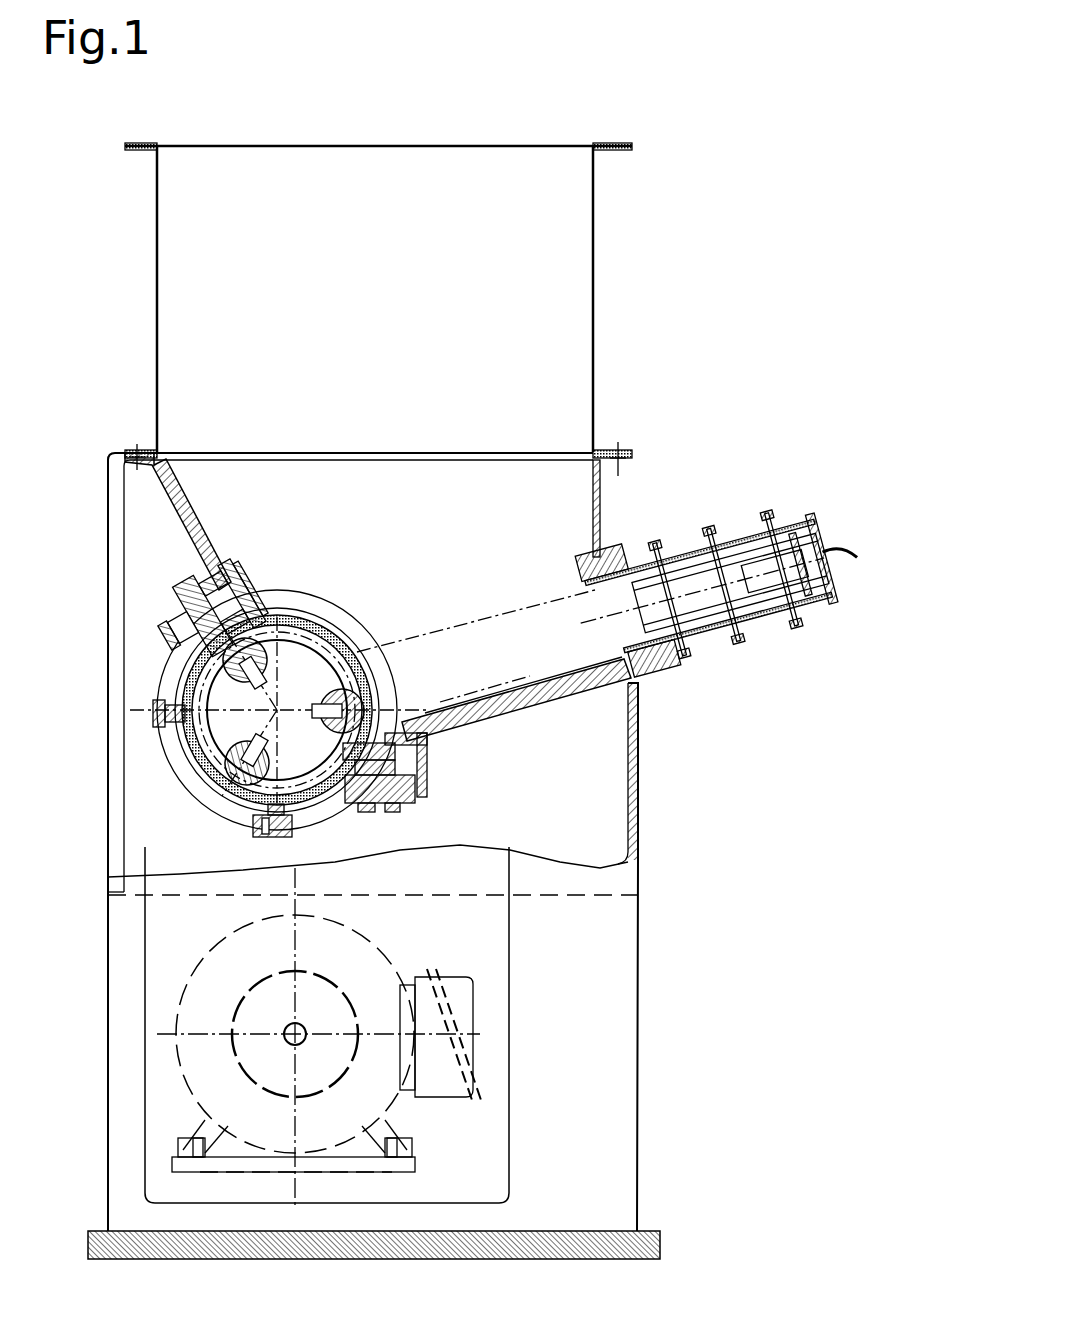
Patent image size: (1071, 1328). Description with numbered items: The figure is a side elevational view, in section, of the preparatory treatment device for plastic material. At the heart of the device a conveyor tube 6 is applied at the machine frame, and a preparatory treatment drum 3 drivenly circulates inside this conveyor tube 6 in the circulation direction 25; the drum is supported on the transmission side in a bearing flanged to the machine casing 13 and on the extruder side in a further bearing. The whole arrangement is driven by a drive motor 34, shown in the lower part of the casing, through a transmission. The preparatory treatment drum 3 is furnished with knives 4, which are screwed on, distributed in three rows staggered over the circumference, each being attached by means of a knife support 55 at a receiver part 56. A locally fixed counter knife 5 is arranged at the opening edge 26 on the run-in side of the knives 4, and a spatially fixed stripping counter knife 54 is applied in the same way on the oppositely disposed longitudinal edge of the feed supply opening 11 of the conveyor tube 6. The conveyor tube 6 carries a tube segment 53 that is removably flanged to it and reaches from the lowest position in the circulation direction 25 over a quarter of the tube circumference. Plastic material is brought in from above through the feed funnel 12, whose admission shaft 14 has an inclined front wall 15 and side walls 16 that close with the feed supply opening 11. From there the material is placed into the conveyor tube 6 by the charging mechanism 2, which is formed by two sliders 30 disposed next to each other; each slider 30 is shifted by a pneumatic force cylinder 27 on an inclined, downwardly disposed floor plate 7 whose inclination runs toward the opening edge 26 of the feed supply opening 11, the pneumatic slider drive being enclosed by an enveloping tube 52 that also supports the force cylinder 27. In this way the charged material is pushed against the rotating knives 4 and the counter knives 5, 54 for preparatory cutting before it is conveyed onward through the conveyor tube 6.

The charging mechanism 2 is at (409, 712).
The preparatory treatment drum 3 is at (308, 705).
The knife of the preparatory treatment drum 4 is at (414, 633).
The locally fixed counter knife 5 is at (255, 812).
The conveyor tube 6 is at (258, 826).
The floor plate 7 is at (540, 705).
The feed supply opening of the conveyor tube 11 is at (320, 620).
The feed funnel 12 is at (590, 425).
The machine casing 13 is at (638, 720).
The admission shaft of the feed funnel 14 is at (218, 530).
The front wall of the feed funnel 15 is at (228, 560).
The side wall of the feed funnel 16 is at (275, 495).
The circulation direction of the preparatory treatment drum 25 is at (165, 727).
The opening edge of the feed supply opening 26 is at (440, 700).
The pneumatic force cylinder of the slider 27 is at (733, 570).
The slider of the charging mechanism 30 is at (640, 590).
The drive motor of the preparatory treatment device 34 is at (330, 980).
The enveloping tube of the pneumatic slider 52 is at (793, 535).
The tube segment of the conveyor tube 53 is at (222, 778).
The stripping counter knife 54 is at (278, 590).
The knife support for the knives 55 is at (185, 592).
The receiver part for the knife support 56 is at (182, 613).